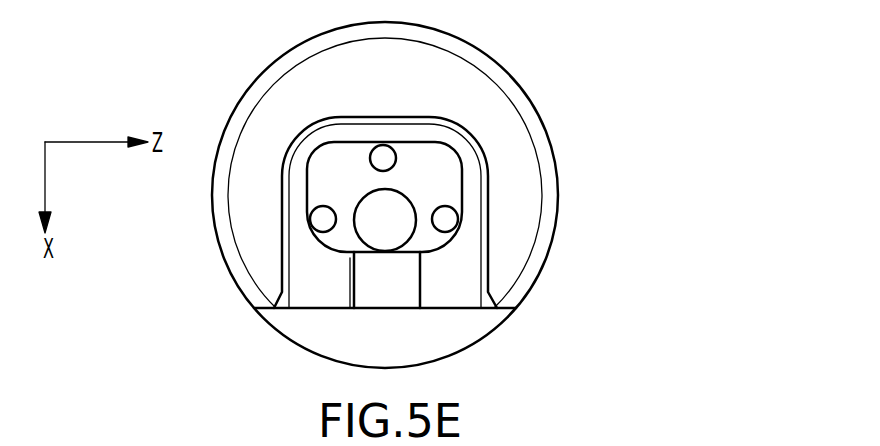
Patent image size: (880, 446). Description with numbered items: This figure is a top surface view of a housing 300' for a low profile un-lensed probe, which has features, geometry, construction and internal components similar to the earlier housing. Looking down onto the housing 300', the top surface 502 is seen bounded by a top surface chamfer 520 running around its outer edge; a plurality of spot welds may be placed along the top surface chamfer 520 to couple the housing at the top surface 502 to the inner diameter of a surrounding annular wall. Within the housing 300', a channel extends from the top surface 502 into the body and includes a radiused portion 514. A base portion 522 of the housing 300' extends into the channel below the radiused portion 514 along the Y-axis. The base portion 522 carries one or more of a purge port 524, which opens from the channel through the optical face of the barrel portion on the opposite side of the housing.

The housing 300' is at (484, 190).
The top surface 502 is at (280, 154).
The radiused portion 514 is at (392, 278).
The top surface chamfer 520 is at (550, 208).
The base portion 522 is at (358, 190).
The purge port 524 is at (387, 155).